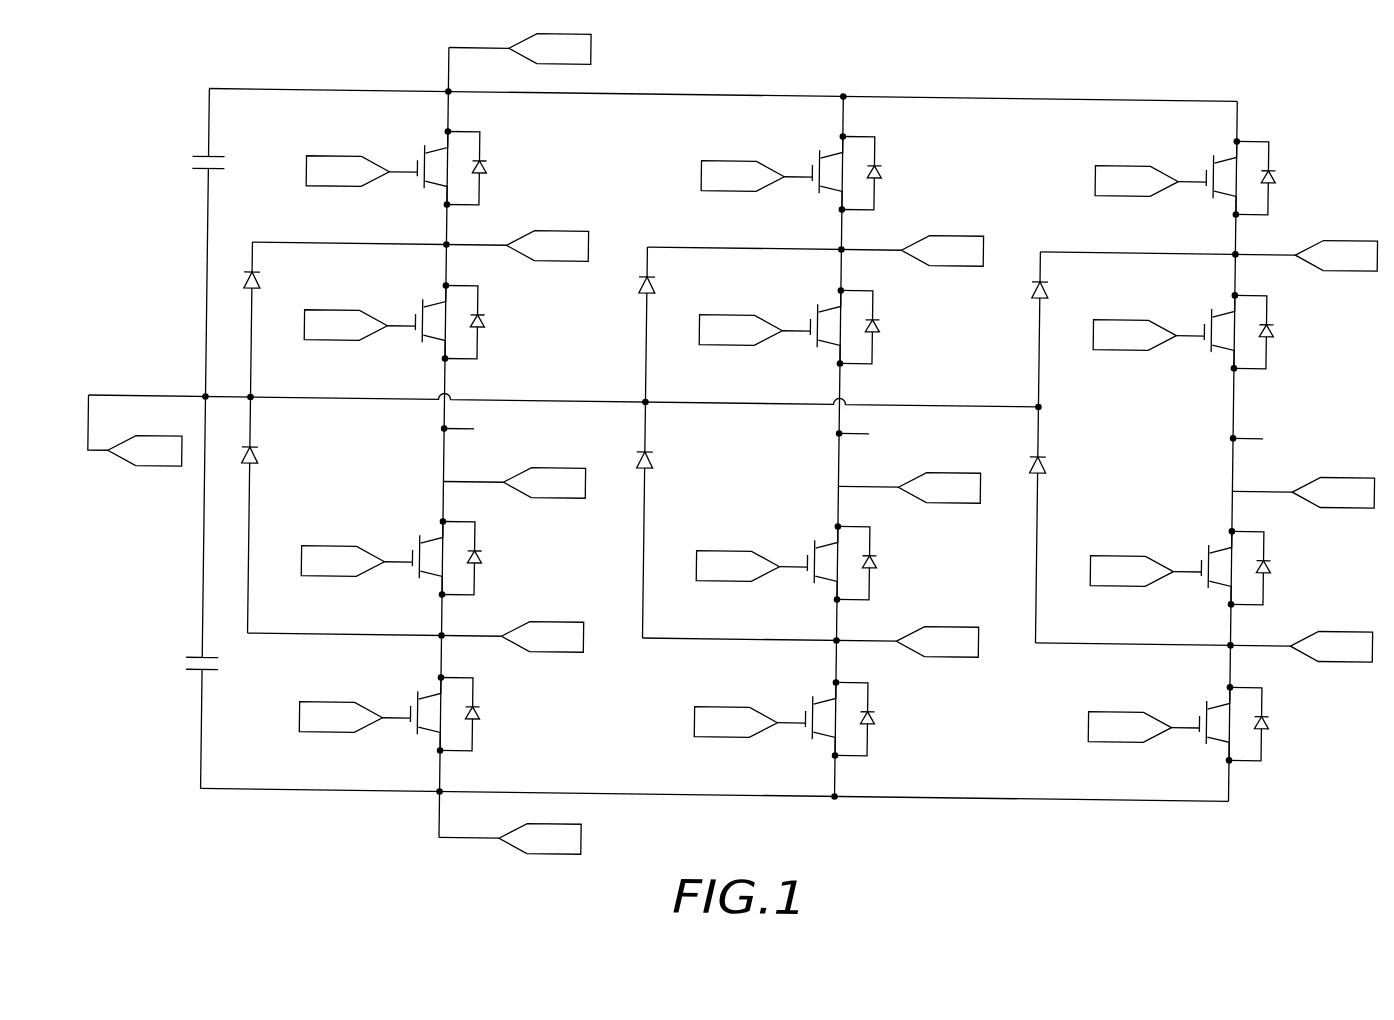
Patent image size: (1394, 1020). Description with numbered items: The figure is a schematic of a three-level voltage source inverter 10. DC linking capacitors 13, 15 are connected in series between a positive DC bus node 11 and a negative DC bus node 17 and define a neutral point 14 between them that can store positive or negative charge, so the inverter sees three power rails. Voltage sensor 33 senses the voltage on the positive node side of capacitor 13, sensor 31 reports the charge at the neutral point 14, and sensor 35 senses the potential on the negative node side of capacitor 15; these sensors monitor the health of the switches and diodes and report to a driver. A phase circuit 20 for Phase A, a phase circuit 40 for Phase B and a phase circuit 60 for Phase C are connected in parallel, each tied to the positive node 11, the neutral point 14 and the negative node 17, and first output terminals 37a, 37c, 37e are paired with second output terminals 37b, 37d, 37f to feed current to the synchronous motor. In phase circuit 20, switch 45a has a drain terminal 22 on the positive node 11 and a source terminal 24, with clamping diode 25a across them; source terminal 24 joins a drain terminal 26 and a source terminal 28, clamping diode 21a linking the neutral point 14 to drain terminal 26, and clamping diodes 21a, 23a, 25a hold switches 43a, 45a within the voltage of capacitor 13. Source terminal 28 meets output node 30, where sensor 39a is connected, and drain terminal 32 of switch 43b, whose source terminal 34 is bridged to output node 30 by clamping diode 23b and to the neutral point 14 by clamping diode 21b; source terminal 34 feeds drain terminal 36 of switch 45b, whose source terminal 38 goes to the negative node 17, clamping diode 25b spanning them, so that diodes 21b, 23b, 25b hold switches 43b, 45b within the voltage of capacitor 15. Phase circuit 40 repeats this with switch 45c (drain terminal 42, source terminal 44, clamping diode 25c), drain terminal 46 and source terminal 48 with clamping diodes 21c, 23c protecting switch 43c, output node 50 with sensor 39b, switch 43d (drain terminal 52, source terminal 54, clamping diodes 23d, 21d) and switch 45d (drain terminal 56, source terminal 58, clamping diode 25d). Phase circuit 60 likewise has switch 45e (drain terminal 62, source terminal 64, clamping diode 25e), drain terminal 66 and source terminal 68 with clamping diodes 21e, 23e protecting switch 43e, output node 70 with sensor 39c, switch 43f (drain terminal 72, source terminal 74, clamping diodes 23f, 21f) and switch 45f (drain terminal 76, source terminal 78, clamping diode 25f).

The inverter 10 is at (1349, 81).
The positive DC bus node 11 is at (306, 94).
The DC linking capacitor 13 is at (189, 174).
The neutral point 14 is at (203, 400).
The DC linking capacitor 15 is at (189, 671).
The negative DC bus node 17 is at (298, 797).
The phase circuit 20 is at (266, 145).
The phase circuit 40 is at (666, 144).
The phase circuit 60 is at (1054, 144).
The clamping diode 21a is at (259, 284).
The clamping diode 21b is at (259, 459).
The clamping diode 21c is at (654, 284).
The clamping diode 21d is at (654, 459).
The clamping diode 21e is at (1047, 284).
The clamping diode 21f is at (1047, 459).
The drain terminal 22 is at (433, 153).
The source terminal 24 is at (433, 194).
The drain terminal 26 is at (433, 307).
The source terminal 28 is at (433, 348).
The output node 30 is at (442, 432).
The drain terminal 32 is at (433, 543).
The source terminal 34 is at (433, 584).
The drain terminal 36 is at (433, 699).
The source terminal 38 is at (433, 740).
The drain terminal 42 is at (828, 153).
The source terminal 44 is at (828, 194).
The drain terminal 46 is at (828, 307).
The source terminal 48 is at (828, 348).
The output node 50 is at (837, 432).
The drain terminal 52 is at (828, 543).
The source terminal 54 is at (828, 584).
The drain terminal 56 is at (828, 699).
The source terminal 58 is at (828, 740).
The drain terminal 62 is at (1222, 153).
The source terminal 64 is at (1222, 194).
The drain terminal 66 is at (1222, 307).
The source terminal 68 is at (1222, 348).
The output node 70 is at (1231, 432).
The drain terminal 72 is at (1222, 543).
The source terminal 74 is at (1222, 584).
The drain terminal 76 is at (1222, 699).
The source terminal 78 is at (1222, 740).
The clamping diode 23a is at (484, 323).
The clamping diode 23b is at (484, 559).
The clamping diode 23c is at (879, 323).
The clamping diode 23d is at (879, 559).
The clamping diode 23e is at (1273, 323).
The clamping diode 23f is at (1273, 559).
The clamping diode 25a is at (484, 169).
The clamping diode 25b is at (484, 715).
The clamping diode 25c is at (879, 169).
The clamping diode 25d is at (879, 715).
The clamping diode 25e is at (1273, 169).
The clamping diode 25f is at (1273, 715).
The voltage sensor 31 is at (170, 471).
The voltage sensor 33 is at (570, 64).
The voltage sensor 35 is at (570, 854).
The first output terminal 37a is at (574, 261).
The second output terminal 37b is at (574, 652).
The first output terminal 37c is at (969, 261).
The second output terminal 37d is at (969, 652).
The first output terminal 37e is at (1363, 261).
The second output terminal 37f is at (1363, 652).
The sensor 39a is at (574, 498).
The sensor 39b is at (969, 498).
The sensor 39c is at (1363, 498).
The switch 43a is at (346, 343).
The switch 43b is at (346, 579).
The switch 43c is at (741, 343).
The switch 43d is at (741, 579).
The switch 43e is at (1135, 343).
The switch 43f is at (1135, 579).
The switch 45a is at (346, 189).
The switch 45b is at (346, 735).
The switch 45c is at (741, 189).
The switch 45d is at (741, 735).
The switch 45e is at (1135, 189).
The switch 45f is at (1135, 735).